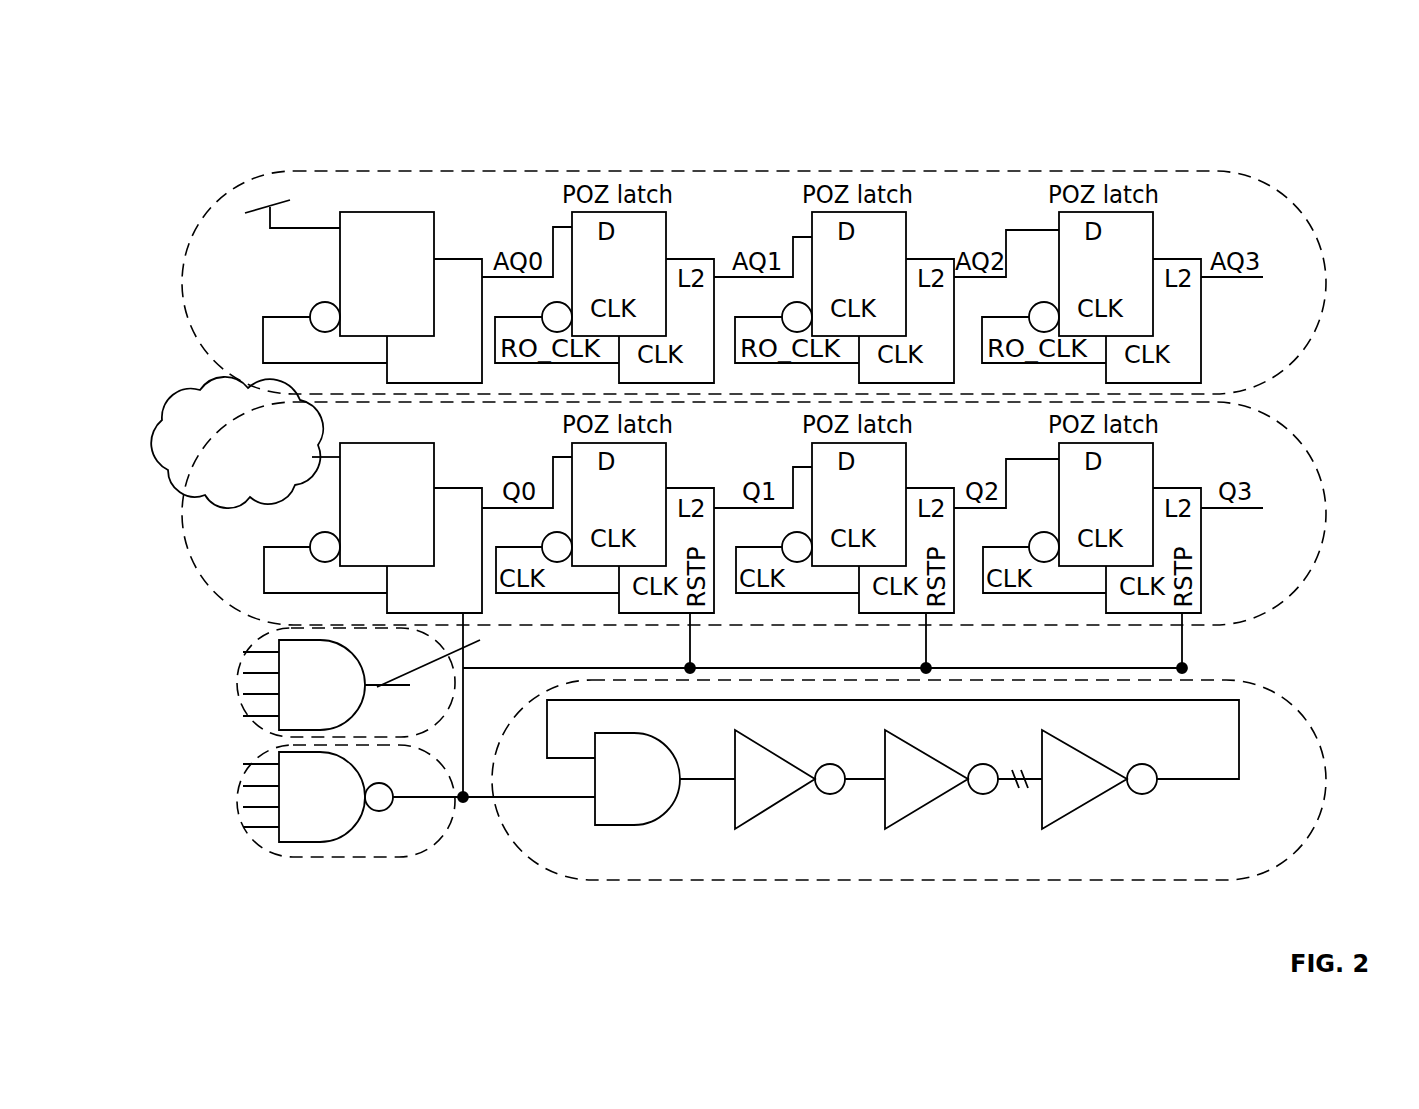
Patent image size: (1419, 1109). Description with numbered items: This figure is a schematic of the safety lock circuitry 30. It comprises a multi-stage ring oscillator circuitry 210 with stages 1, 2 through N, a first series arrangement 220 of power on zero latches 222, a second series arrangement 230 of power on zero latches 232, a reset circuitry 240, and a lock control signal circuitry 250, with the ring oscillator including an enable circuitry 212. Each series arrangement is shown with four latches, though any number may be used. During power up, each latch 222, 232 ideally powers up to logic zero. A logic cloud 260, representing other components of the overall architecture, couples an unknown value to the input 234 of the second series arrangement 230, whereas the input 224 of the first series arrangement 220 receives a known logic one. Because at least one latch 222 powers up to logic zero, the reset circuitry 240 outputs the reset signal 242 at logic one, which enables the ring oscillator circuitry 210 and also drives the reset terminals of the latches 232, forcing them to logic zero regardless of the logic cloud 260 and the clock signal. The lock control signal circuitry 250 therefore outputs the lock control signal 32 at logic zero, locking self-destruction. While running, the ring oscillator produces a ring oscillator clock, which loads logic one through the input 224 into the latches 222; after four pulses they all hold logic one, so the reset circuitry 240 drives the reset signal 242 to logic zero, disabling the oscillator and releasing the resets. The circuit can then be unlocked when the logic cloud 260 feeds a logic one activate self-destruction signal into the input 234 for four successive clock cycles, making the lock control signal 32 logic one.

The safety lock circuitry 30 is at (1313, 112).
The first series arrangement of POZ latches 220 is at (1325, 283).
The second series arrangement of POZ latches 230 is at (1325, 513).
The multi-stage ring oscillator circuitry 210 is at (1325, 781).
The input of the first series arrangement 224 is at (270, 228).
The POZ latch 222 is at (340, 248).
The logic cloud 260 is at (172, 460).
The input of the second series arrangement 234 is at (340, 509).
The POZ latch 232 is at (333, 457).
The lock control signal 32 is at (385, 688).
The lock control signal circuitry 250 is at (270, 733).
The reset circuitry 240 is at (317, 857).
The RSTP signal 242 is at (447, 797).
The enable circuitry 212 is at (632, 817).
The ring oscillator stage 1 is at (758, 798).
The ring oscillator stage 2 is at (922, 798).
The ring oscillator stage N is at (1063, 802).